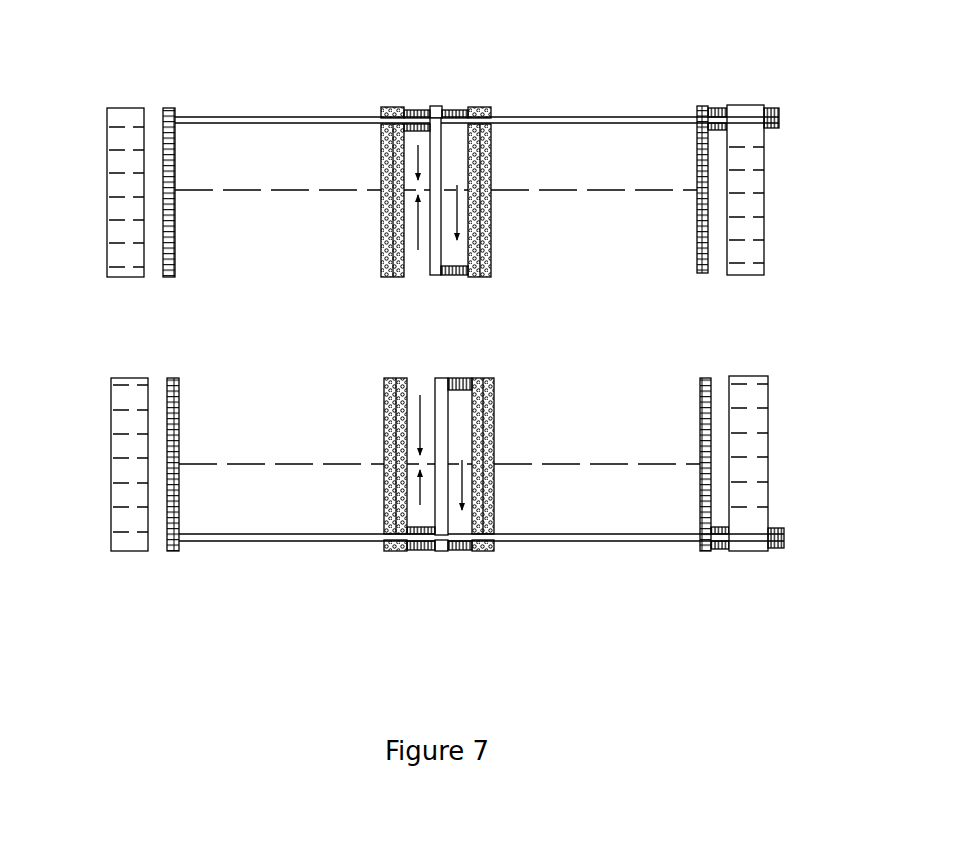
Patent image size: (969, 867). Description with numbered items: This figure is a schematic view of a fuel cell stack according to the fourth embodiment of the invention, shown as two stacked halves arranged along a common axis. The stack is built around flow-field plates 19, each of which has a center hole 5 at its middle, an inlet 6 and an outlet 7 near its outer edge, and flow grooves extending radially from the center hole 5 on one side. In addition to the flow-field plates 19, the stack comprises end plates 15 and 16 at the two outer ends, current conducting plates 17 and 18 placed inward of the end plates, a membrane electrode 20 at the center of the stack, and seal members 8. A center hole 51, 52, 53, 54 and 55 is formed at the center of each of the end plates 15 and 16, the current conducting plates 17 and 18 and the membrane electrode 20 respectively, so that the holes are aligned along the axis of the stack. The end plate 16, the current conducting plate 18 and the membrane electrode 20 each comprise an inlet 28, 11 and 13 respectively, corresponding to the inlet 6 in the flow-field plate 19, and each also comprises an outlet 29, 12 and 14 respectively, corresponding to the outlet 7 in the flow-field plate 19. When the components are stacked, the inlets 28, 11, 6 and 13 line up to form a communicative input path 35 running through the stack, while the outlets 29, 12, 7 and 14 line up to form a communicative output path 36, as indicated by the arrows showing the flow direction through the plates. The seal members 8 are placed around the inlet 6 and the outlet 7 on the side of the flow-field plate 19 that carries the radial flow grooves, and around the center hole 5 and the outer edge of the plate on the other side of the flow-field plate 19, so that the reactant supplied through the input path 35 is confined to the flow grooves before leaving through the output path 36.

The center hole 5 is at (487, 303).
The inlet 6 is at (485, 120).
The outlet 7 is at (497, 558).
The seal member 8 is at (415, 107).
The inlet 11 is at (699, 108).
The outlet 12 is at (705, 553).
The inlet 13 is at (440, 118).
The outlet 14 is at (441, 541).
The end plate 15 is at (125, 106).
The end plate 16 is at (745, 100).
The current conducting plate 17 is at (168, 106).
The current conducting plate 18 is at (700, 104).
The flow-field plate 19 is at (388, 104).
The membrane electrode 20 is at (437, 105).
The inlet 28 is at (760, 118).
The outlet 29 is at (763, 537).
The input path 35 is at (585, 120).
The output path 36 is at (578, 544).
The center hole 51 is at (127, 322).
The center hole 52 is at (752, 310).
The center hole 53 is at (170, 316).
The center hole 54 is at (702, 315).
The center hole 55 is at (442, 323).